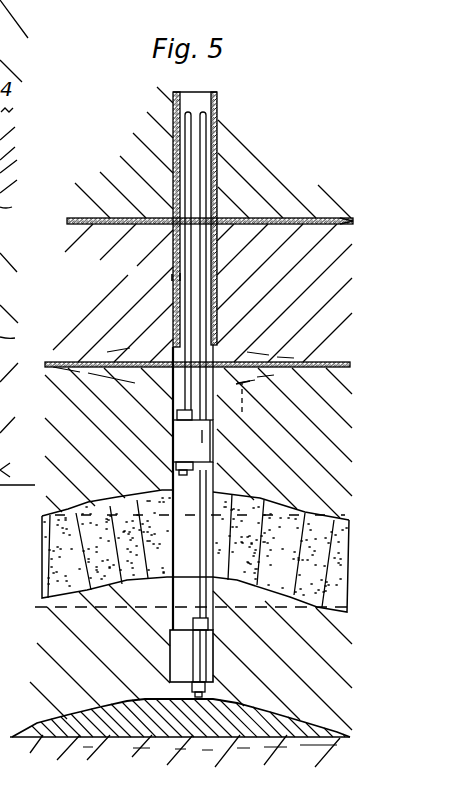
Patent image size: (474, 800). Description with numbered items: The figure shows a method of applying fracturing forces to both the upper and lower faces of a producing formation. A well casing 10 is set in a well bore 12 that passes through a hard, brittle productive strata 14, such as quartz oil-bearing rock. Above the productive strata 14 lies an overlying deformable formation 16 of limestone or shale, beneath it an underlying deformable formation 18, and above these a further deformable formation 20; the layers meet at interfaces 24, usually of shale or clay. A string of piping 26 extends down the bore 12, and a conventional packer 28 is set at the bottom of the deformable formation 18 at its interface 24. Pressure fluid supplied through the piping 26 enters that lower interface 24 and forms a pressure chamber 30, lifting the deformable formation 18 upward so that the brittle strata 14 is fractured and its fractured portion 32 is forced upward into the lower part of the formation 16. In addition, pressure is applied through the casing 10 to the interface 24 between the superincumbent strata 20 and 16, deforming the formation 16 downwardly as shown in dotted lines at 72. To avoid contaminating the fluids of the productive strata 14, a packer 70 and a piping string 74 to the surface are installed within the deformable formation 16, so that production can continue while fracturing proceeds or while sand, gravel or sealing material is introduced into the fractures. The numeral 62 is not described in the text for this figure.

The well casing 10 is at (217, 121).
The well bore 12 is at (172, 622).
The productive strata 14 is at (62, 538).
The overlying deformable formation 16 is at (109, 440).
The underlying deformable formation 18 is at (78, 657).
The deformable formation 20 is at (83, 295).
The interfaces 24 is at (66, 370).
The string of piping 26 is at (197, 153).
The packer 28 is at (188, 645).
The pressure chamber 30 is at (126, 717).
The fractured portion 32 is at (257, 497).
The side element 62 is at (12, 227).
The packer 70 is at (176, 447).
The downward deformation of strata 16 72 is at (249, 409).
The piping string 74 is at (185, 277).